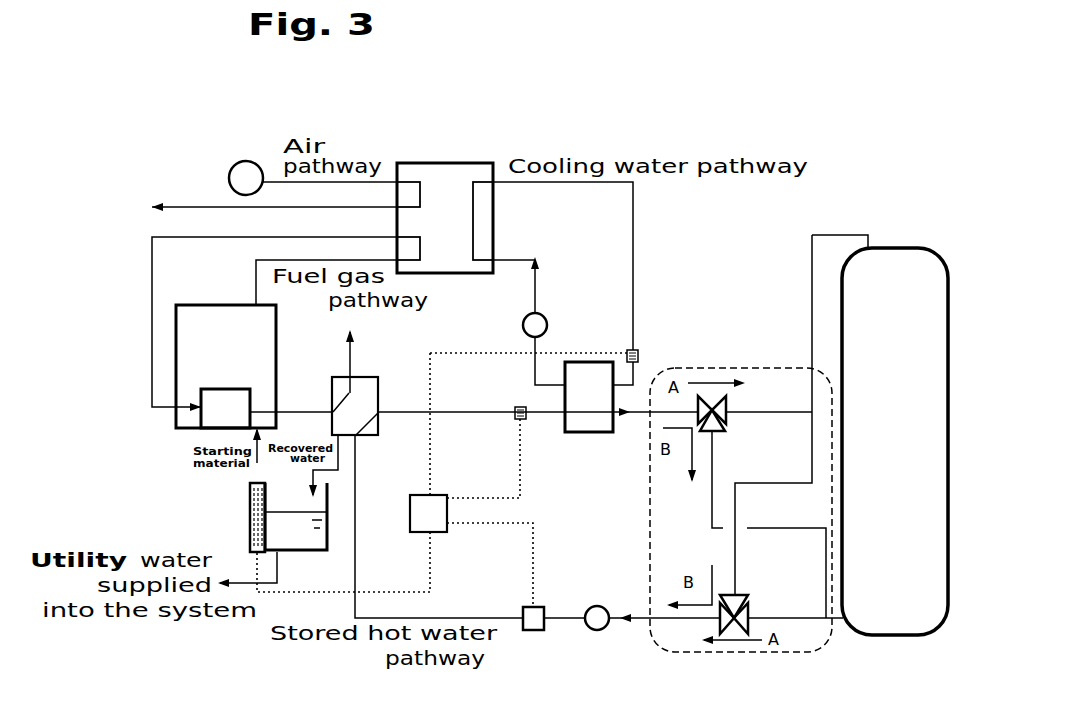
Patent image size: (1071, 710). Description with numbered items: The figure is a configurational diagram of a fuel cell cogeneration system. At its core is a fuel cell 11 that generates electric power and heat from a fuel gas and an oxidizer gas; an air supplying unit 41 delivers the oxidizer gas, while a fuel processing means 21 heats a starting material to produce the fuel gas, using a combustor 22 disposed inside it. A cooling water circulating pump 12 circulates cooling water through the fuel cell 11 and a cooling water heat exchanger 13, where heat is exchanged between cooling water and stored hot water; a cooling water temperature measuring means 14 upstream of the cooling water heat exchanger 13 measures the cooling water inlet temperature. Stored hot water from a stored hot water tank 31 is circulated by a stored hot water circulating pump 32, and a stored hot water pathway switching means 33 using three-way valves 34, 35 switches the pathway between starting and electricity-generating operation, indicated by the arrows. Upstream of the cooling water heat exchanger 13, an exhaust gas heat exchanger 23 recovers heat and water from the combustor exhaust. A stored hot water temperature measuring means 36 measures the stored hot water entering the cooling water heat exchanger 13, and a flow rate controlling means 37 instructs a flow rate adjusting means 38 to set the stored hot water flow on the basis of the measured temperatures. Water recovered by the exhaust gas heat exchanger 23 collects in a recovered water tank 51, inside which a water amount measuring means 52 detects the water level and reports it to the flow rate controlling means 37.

The fuel cell 11 is at (448, 180).
The cooling water circulating pump 12 is at (540, 322).
The cooling water heat exchanger 13 is at (580, 423).
The cooling water temperature measuring means 14 is at (639, 353).
The fuel processing means 21 is at (258, 353).
The combustor 22 is at (225, 415).
The exhaust gas heat exchanger 23 is at (362, 403).
The stored hot water tank 31 is at (915, 282).
The stored hot water circulating pump 32 is at (598, 616).
The stored hot water pathway switching means 33 is at (825, 642).
The three-way valve 34 is at (718, 415).
The three-way valve 35 is at (743, 617).
The stored hot water temperature measuring means 36 is at (515, 418).
The flow rate controlling means 37 is at (420, 503).
The flow rate adjusting means 38 is at (535, 622).
The air supplying unit 41 is at (240, 178).
The recovered water tank 51 is at (296, 530).
The water amount measuring means 52 is at (250, 515).